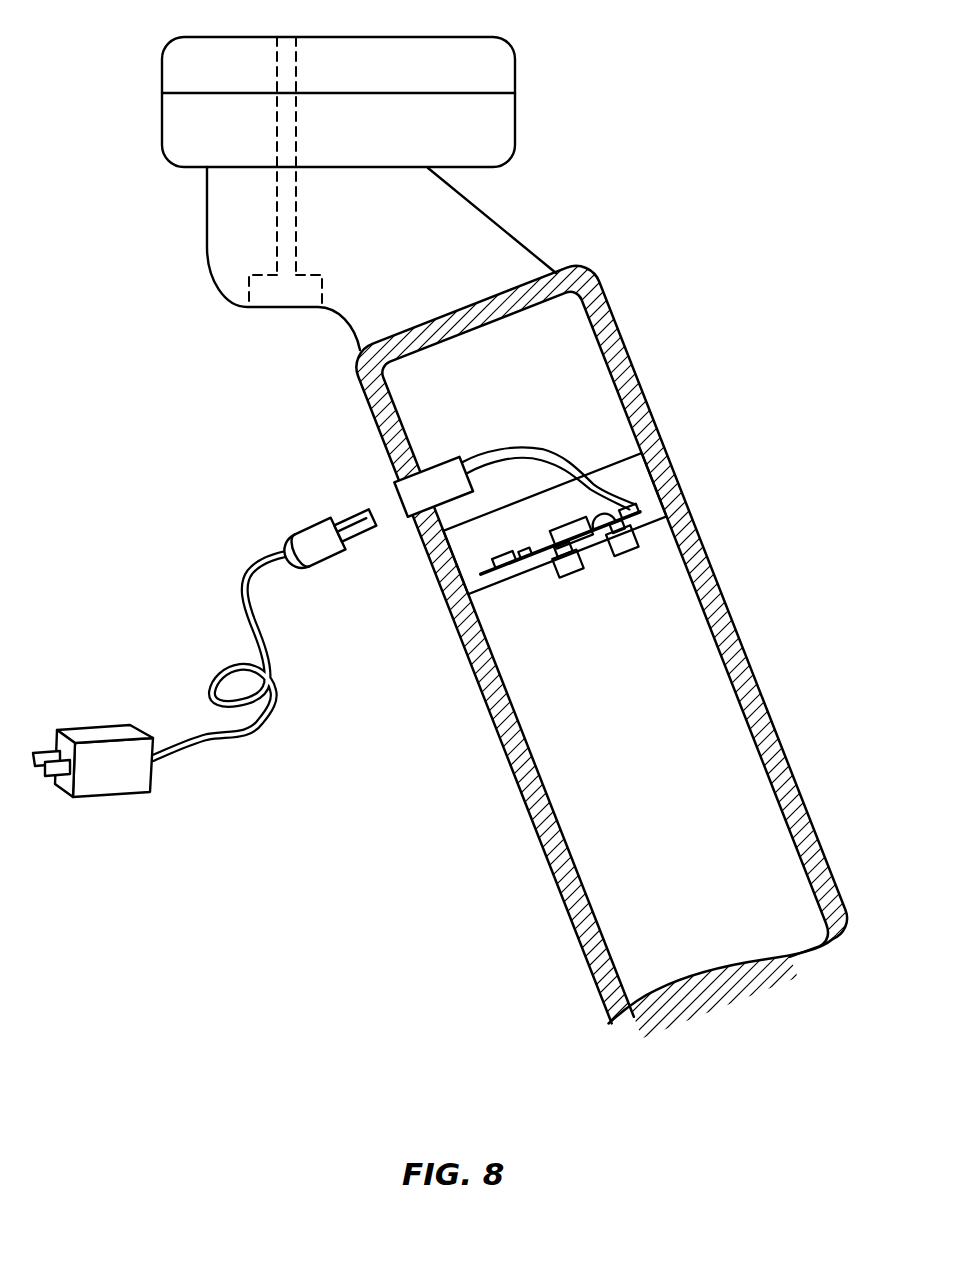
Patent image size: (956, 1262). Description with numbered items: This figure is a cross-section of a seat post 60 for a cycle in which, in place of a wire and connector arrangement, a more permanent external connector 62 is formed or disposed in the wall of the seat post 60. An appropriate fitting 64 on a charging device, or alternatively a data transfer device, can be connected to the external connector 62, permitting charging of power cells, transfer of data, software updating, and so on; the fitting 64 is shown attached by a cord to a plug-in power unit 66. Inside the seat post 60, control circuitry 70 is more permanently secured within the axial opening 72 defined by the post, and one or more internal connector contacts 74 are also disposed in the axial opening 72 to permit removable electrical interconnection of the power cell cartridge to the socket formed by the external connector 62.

The seat post 60 is at (618, 318).
The external connector 62 is at (410, 518).
The fitting 64 is at (350, 510).
The power adapter 66 is at (132, 793).
The control circuitry 70 is at (640, 490).
The axial opening 72 is at (585, 407).
The internal connector contacts 74 is at (578, 568).